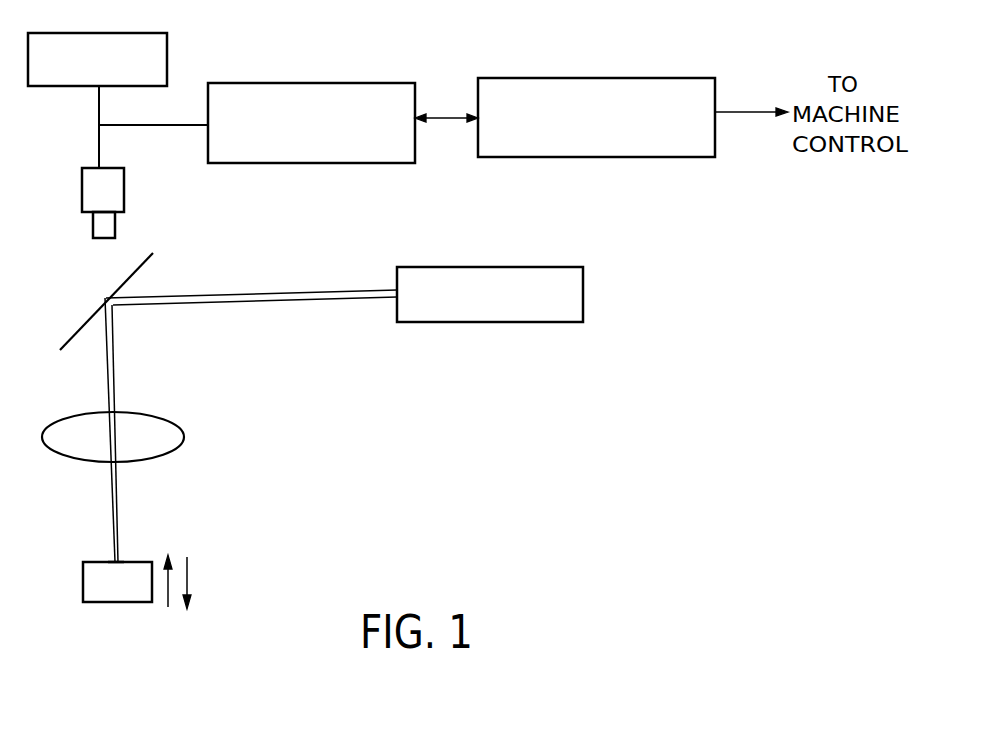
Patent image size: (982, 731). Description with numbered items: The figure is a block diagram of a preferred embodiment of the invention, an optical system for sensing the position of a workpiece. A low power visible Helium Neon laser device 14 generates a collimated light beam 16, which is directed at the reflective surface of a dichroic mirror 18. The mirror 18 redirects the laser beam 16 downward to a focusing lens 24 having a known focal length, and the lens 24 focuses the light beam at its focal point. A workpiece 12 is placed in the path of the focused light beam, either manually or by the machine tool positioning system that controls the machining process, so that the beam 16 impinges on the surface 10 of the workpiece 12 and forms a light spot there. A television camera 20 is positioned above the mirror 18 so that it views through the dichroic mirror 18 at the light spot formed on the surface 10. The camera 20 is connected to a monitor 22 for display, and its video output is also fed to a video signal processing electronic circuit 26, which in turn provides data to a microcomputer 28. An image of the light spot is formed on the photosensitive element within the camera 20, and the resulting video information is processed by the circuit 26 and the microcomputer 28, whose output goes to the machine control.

The surface 10 is at (135, 562).
The workpiece 12 is at (92, 580).
The Helium Neon laser device 14 is at (450, 267).
The collimated light beam 16 is at (248, 296).
The dichroic mirror 18 is at (77, 330).
The television camera 20 is at (82, 197).
The monitor 22 is at (168, 60).
The focusing lens 24 is at (165, 418).
The video signal processing electronic circuit 26 is at (316, 83).
The microcomputer 28 is at (590, 78).